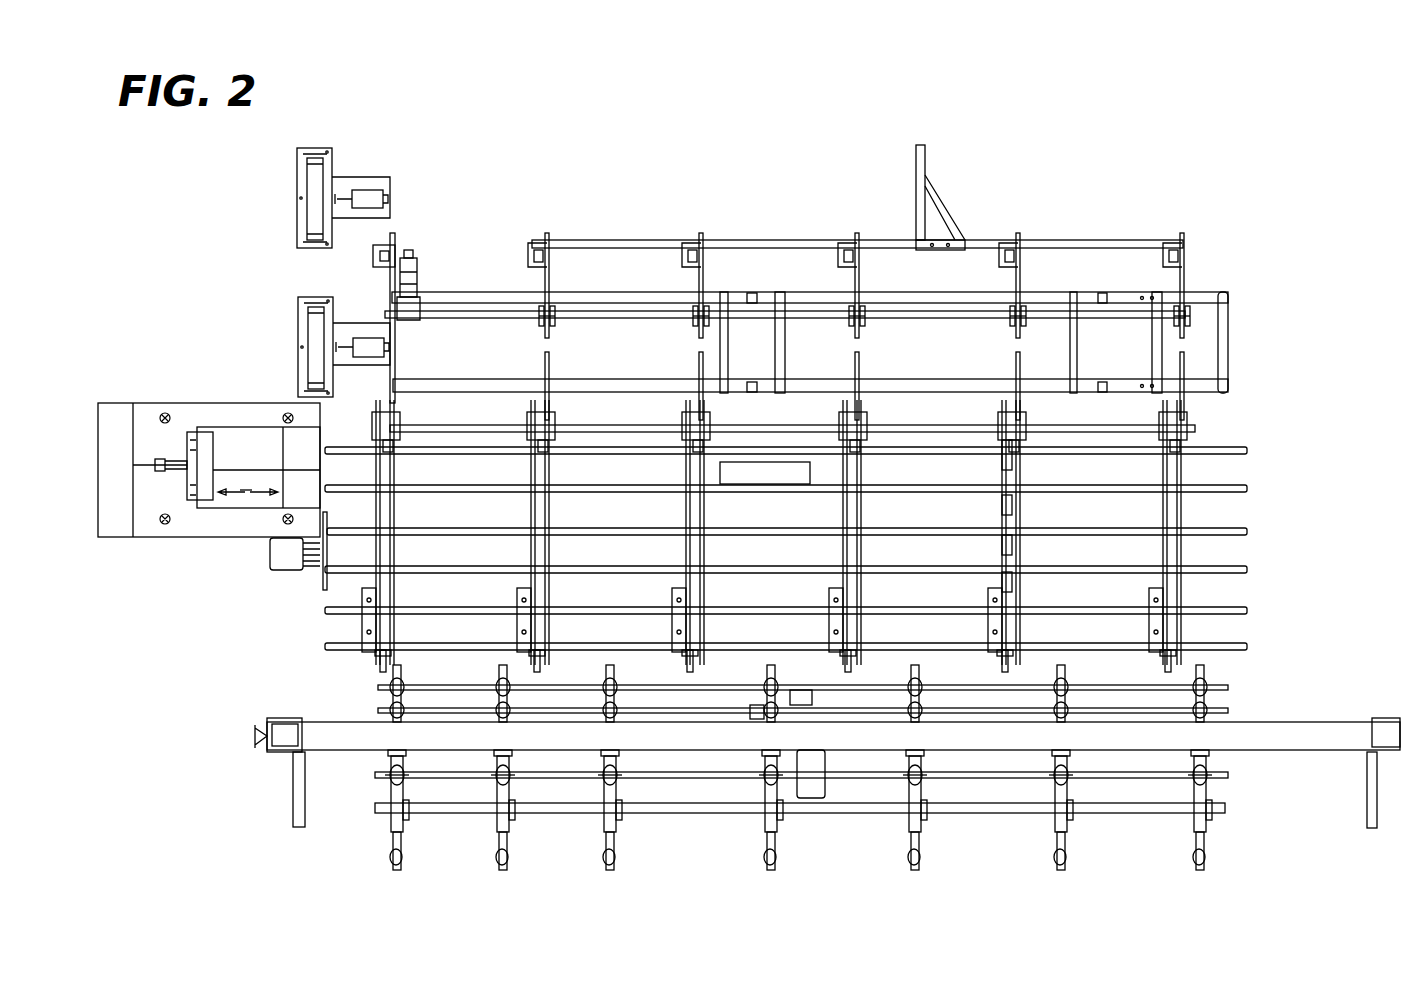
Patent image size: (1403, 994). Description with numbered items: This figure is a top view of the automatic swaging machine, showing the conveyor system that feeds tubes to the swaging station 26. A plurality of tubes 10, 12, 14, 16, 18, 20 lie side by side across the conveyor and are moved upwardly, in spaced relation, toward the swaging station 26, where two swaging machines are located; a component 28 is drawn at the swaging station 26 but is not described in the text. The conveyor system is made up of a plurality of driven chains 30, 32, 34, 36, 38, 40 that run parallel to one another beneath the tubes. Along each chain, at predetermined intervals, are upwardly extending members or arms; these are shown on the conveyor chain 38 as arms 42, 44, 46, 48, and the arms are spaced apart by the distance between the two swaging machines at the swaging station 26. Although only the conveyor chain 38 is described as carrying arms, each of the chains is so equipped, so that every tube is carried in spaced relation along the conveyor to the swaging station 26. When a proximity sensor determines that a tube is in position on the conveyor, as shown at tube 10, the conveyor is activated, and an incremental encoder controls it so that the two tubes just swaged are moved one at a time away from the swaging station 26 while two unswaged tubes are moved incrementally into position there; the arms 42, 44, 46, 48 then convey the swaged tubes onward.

The tube 10 is at (1247, 646).
The tube 12 is at (1247, 610).
The tube 14 is at (1247, 569).
The tube 16 is at (1247, 531).
The tube 18 is at (1247, 488).
The tube 20 is at (1247, 450).
The swaging station 26 is at (193, 552).
The drive motor 28 is at (243, 452).
The driven chain 30 is at (246, 493).
The driven chain 32 is at (537, 660).
The driven chain 34 is at (692, 660).
The driven chain 36 is at (848, 660).
The conveyor chain 38 is at (1005, 660).
The driven chain 40 is at (1168, 660).
The upwardly extending arm 42 is at (1006, 580).
The upwardly extending arm 44 is at (1008, 545).
The upwardly extending arm 46 is at (1008, 505).
The upwardly extending arm 48 is at (1008, 465).